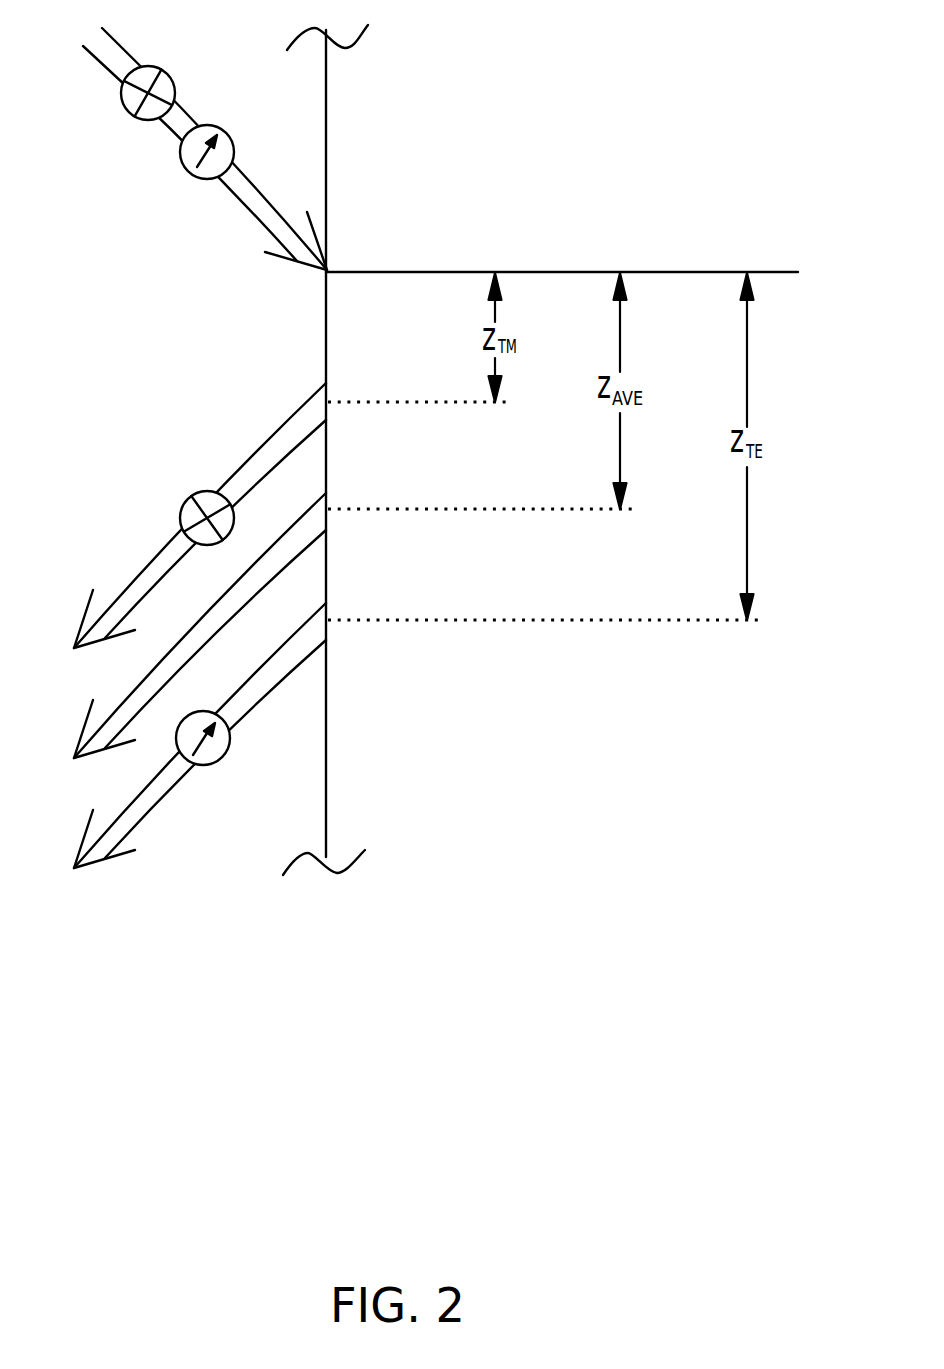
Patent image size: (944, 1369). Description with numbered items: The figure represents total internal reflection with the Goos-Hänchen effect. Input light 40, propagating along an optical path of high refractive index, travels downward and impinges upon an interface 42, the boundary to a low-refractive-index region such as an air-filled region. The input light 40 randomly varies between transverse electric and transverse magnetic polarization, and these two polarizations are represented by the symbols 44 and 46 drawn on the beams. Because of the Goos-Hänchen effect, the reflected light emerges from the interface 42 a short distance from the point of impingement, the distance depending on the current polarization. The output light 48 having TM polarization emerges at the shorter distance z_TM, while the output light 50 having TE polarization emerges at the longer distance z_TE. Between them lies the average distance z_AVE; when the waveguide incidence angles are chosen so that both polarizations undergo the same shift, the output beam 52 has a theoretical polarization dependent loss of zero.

The input light 40 is at (102, 57).
The interface 42 is at (327, 130).
The polarization symbol 44 is at (128, 111).
The polarization symbol 46 is at (184, 167).
The output light 48 is at (141, 586).
The output light 50 is at (140, 808).
The output beam 52 is at (134, 688).